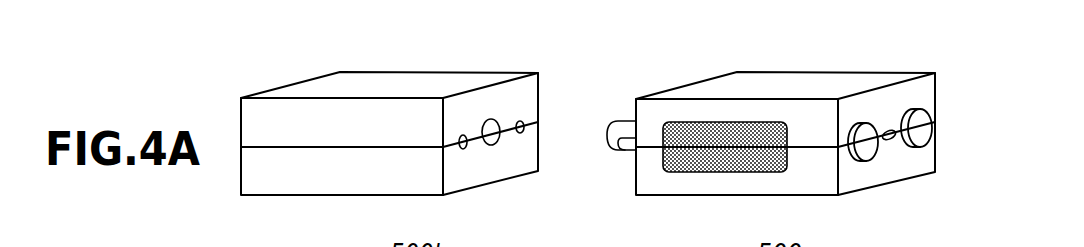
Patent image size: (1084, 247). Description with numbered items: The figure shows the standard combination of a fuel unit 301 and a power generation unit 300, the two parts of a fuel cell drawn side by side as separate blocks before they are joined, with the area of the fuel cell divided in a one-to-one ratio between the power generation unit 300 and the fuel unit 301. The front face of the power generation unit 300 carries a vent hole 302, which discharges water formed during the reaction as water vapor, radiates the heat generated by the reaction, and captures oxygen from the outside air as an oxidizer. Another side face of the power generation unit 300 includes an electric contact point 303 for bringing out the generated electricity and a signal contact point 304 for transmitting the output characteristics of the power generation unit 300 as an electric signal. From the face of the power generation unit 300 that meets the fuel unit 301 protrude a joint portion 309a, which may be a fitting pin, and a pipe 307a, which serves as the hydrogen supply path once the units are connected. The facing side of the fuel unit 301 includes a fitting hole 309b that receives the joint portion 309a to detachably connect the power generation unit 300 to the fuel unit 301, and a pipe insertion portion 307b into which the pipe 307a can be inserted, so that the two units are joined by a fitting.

The power generation unit 300 is at (793, 72).
The fuel unit 301 is at (398, 72).
The vent hole 302 is at (710, 150).
The electric contact point 303 is at (868, 120).
The signal contact point 304 is at (891, 140).
The pipe 307a is at (630, 120).
The pipe insertion portion 307b is at (491, 145).
The joint portion 309a is at (626, 153).
The fitting hole 309b is at (463, 135).